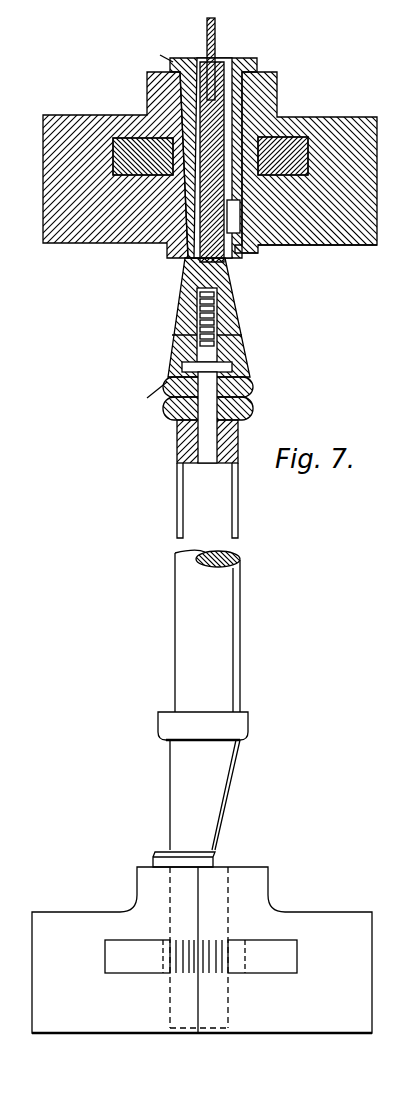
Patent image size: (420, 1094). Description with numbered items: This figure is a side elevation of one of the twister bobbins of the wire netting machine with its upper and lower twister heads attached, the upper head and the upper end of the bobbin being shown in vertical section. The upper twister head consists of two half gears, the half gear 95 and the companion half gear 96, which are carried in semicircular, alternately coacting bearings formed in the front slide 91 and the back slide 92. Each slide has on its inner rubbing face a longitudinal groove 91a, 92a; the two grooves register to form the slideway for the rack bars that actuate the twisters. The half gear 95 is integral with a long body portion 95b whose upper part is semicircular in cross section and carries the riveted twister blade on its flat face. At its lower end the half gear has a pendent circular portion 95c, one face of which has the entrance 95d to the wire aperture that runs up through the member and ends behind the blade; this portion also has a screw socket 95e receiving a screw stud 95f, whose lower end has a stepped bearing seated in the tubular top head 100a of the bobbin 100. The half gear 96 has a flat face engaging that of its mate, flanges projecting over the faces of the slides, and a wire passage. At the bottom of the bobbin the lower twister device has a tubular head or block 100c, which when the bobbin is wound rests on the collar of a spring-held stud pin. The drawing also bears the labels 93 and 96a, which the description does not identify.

The front slide 91 is at (378, 201).
The longitudinal groove 91a is at (298, 137).
The back slide 92 is at (65, 232).
The longitudinal groove 92a is at (130, 138).
The die part 93 is at (410, 330).
The half gear 95 is at (152, 178).
The long body portion 95b is at (262, 250).
The pendent circular portion 95c is at (210, 231).
The entrance 95d is at (216, 45).
The screw socket 95e is at (197, 340).
The screw stud 95f is at (182, 364).
The half gear 96 is at (230, 970).
The passage 96a is at (310, 247).
The bobbin 100 is at (204, 619).
The tubular top head 100a is at (243, 402).
The tubular head or block 100c is at (237, 727).